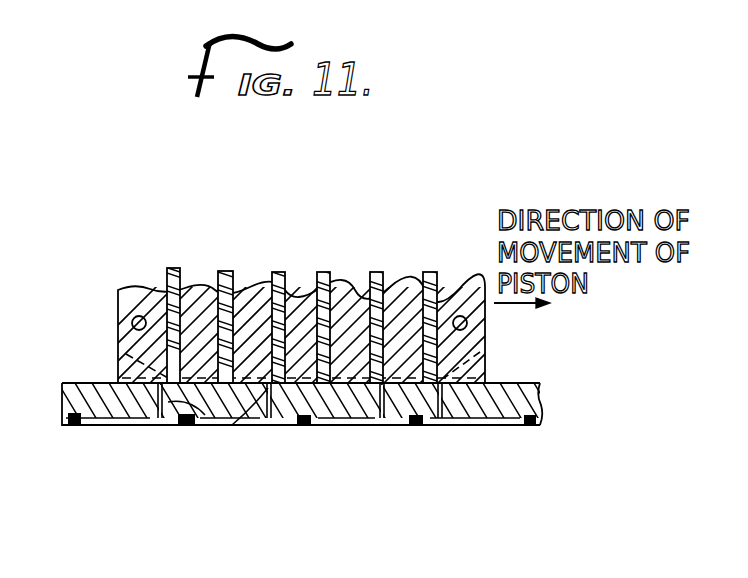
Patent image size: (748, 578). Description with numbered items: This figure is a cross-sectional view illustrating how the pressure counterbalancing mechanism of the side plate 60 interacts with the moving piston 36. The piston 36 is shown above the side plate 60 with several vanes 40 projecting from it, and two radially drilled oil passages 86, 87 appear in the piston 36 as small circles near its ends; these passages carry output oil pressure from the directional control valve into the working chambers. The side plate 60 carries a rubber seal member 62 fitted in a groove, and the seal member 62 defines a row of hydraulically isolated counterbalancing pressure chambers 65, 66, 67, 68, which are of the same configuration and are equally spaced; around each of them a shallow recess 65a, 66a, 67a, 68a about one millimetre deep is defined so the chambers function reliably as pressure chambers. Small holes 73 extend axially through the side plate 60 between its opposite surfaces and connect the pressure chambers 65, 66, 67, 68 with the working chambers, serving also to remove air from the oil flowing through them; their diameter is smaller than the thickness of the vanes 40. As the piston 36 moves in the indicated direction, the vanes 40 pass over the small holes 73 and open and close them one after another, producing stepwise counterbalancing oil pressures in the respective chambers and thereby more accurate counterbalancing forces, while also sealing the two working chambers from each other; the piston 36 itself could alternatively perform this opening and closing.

The piston 36 is at (296, 298).
The vanes 40 is at (430, 272).
The side plate 60 is at (518, 383).
The seal member 62 is at (70, 428).
The pressure chamber 65 is at (118, 428).
The shallow recess 65a is at (90, 428).
The pressure chamber 66 is at (250, 428).
The shallow recess 66a is at (238, 428).
The pressure chamber 67 is at (356, 428).
The shallow recess 67a is at (330, 428).
The pressure chamber 68 is at (480, 428).
The shallow recess 68a is at (462, 428).
The small holes 73 is at (235, 428).
The oil passage 86 is at (130, 320).
The oil passage 87 is at (467, 323).